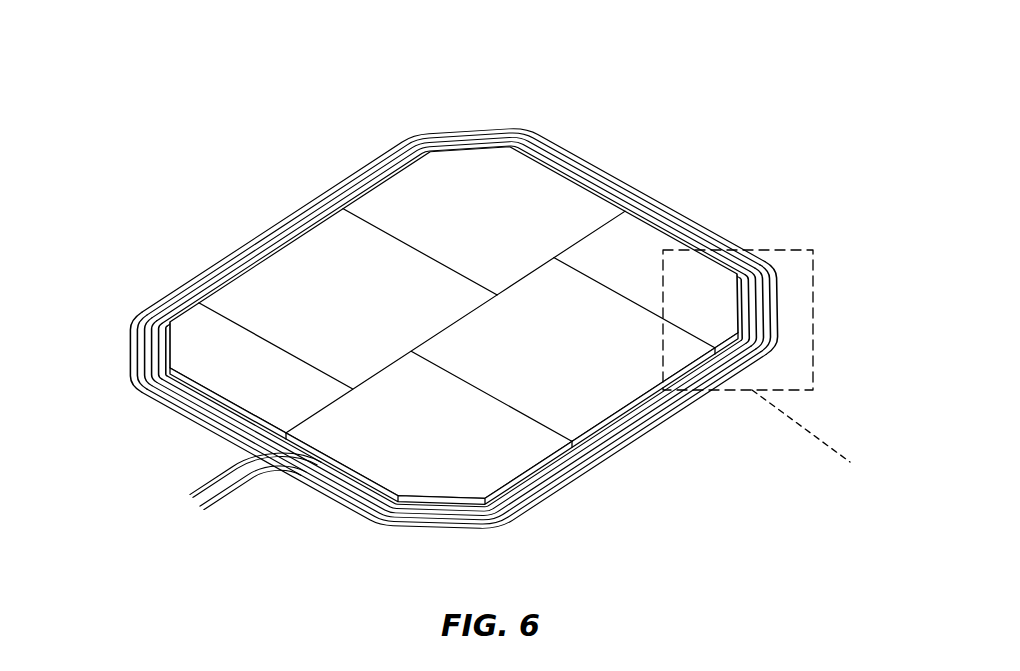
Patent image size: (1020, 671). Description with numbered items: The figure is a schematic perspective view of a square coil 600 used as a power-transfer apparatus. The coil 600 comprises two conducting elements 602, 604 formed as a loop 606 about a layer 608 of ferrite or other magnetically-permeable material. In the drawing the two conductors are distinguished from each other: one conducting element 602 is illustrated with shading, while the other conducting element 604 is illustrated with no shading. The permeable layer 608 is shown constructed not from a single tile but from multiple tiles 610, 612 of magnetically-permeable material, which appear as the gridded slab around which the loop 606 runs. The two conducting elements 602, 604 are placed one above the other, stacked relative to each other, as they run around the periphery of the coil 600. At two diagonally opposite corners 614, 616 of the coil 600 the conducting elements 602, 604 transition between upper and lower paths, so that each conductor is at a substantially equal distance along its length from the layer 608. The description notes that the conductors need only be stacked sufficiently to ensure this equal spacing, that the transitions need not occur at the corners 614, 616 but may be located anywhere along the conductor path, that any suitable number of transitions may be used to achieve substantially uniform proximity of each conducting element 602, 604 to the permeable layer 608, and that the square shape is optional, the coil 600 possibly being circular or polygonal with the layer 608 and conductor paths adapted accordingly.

The square coil 600 is at (832, 48).
The conducting element 602 is at (442, 533).
The conducting element 604 is at (382, 516).
The loop 606 is at (665, 426).
The layer of ferrite or other magnetically-permeable material 608 is at (658, 228).
The tile of magnetically-permeable material 610 is at (407, 188).
The tile of magnetically-permeable material 612 is at (293, 273).
The corner of the coil 614 is at (123, 331).
The corner of the coil 616 is at (790, 308).